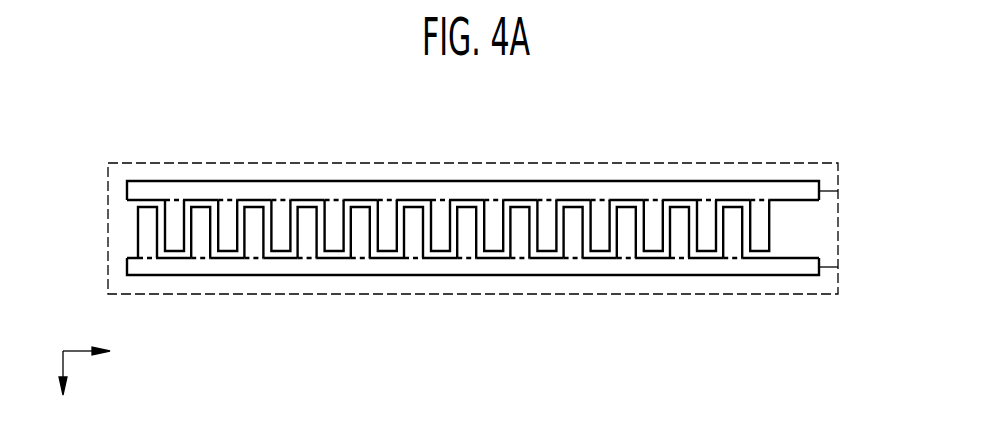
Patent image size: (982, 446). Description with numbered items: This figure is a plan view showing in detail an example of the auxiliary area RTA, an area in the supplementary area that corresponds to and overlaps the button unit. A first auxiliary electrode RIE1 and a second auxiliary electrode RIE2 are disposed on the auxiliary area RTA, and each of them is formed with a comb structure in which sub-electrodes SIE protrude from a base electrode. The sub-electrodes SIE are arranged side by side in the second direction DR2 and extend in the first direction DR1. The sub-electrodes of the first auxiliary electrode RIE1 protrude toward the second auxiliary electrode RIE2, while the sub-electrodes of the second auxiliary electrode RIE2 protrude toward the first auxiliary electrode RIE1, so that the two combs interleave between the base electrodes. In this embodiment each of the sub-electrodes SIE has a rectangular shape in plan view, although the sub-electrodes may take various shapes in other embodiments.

The auxiliary area RTA is at (181, 162).
The first auxiliary electrode RIE1 is at (127, 190).
The second auxiliary electrode RIE2 is at (127, 263).
The sub-electrodes SIE is at (770, 222).
The first direction DR1 is at (63, 388).
The second direction DR2 is at (106, 350).